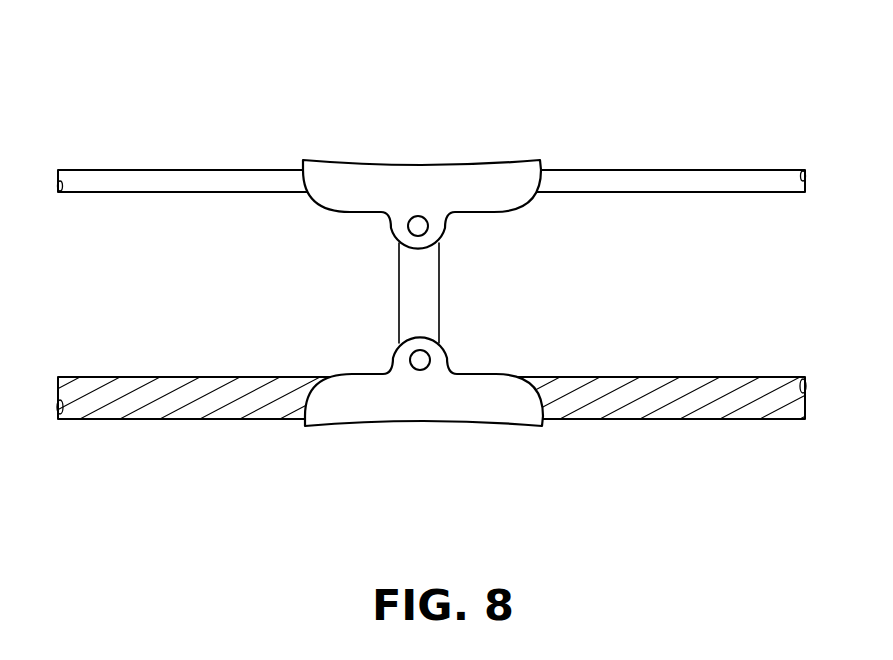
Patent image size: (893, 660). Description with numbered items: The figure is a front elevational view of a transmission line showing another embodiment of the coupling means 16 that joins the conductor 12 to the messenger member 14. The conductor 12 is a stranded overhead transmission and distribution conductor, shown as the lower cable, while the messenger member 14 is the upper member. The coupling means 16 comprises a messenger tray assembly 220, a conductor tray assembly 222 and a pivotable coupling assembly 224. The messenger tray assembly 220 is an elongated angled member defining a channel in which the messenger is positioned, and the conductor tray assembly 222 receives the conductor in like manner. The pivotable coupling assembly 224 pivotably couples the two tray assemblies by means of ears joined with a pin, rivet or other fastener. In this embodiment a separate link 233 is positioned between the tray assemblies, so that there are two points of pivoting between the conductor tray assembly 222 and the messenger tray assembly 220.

The conductor 12 is at (124, 424).
The messenger member 14 is at (165, 167).
The coupling means 16 is at (459, 282).
The messenger tray assembly 220 is at (447, 163).
The conductor tray assembly 222 is at (488, 430).
The pivotable coupling assembly 224 is at (459, 298).
The link 233 is at (427, 300).